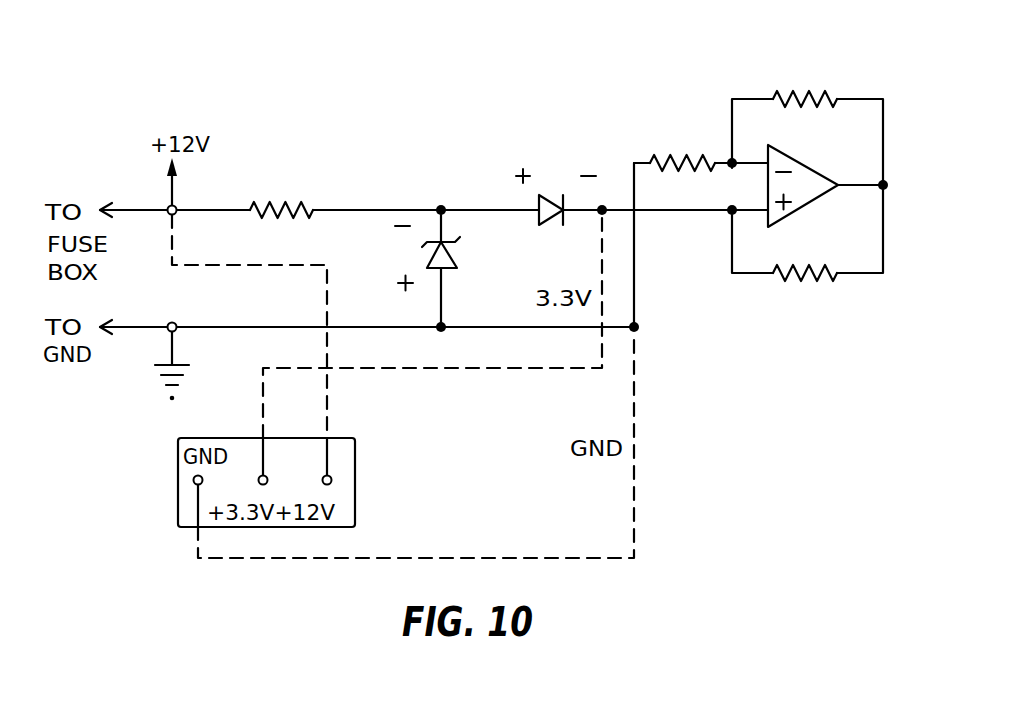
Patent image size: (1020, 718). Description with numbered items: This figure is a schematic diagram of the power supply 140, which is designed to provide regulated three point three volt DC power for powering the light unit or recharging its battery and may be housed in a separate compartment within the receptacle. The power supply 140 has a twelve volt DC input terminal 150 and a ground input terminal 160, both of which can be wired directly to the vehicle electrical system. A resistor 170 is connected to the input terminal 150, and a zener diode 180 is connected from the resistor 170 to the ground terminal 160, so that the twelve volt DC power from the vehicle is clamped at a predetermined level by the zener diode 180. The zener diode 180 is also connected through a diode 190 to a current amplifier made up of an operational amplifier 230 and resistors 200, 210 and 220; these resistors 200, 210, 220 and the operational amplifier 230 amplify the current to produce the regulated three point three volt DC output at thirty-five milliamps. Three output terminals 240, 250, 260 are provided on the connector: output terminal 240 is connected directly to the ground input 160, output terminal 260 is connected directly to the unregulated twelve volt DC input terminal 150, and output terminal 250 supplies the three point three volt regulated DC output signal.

The power supply 140 is at (444, 96).
The 12 V DC input terminal 150 is at (176, 206).
The ground input terminal 160 is at (170, 331).
The resistor 170 is at (280, 202).
The zener diode 180 is at (458, 248).
The diode 190 is at (557, 195).
The resistor 200 is at (686, 155).
The resistor 210 is at (818, 93).
The resistor 220 is at (795, 284).
The operational amplifier 230 is at (820, 175).
The output terminal 240 is at (193, 480).
The output terminal 250 is at (259, 477).
The output terminal 260 is at (332, 477).